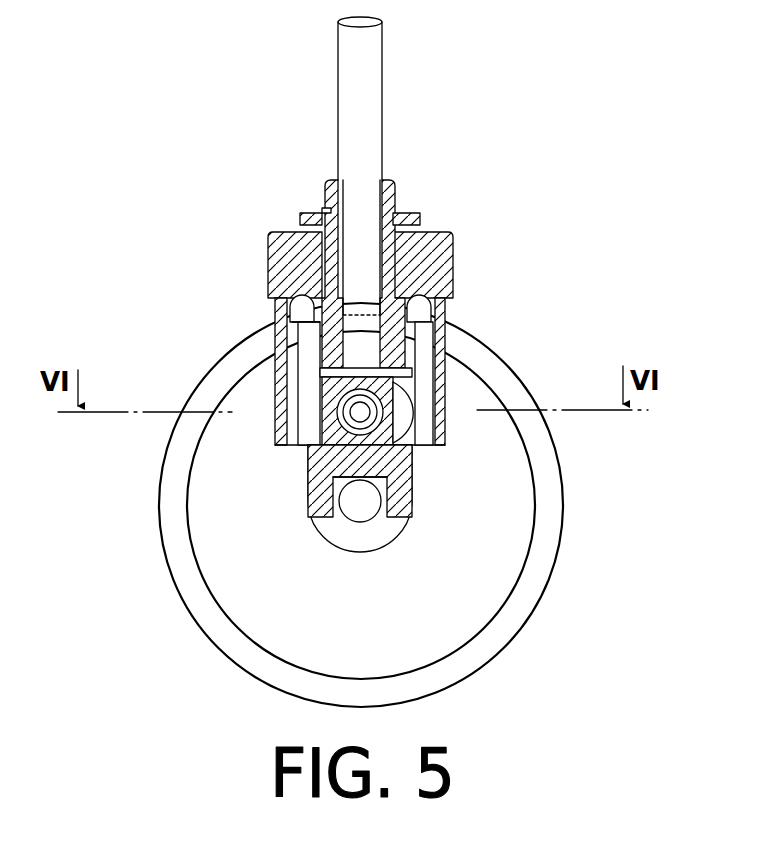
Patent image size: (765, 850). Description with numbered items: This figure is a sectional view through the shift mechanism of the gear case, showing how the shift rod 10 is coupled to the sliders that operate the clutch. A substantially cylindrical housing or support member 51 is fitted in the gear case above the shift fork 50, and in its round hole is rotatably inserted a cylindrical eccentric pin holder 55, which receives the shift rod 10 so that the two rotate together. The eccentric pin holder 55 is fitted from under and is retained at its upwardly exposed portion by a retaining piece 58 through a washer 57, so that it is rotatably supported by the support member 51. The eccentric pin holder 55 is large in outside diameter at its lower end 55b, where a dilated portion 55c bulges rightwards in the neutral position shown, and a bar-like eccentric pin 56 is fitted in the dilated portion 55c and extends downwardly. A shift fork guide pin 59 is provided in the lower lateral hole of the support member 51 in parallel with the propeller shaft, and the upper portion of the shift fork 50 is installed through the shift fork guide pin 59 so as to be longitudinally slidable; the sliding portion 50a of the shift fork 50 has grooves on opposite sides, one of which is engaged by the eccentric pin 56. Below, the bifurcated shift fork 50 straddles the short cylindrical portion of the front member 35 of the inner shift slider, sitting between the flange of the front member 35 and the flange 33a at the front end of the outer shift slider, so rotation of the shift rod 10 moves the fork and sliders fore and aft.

The shift rod 10 is at (385, 52).
The retaining piece 58 is at (323, 208).
The washer 57 is at (300, 213).
The eccentric pin holder 55 is at (395, 186).
The support member 51 is at (453, 236).
The dilated portion 55c is at (286, 340).
The lower end 55b is at (440, 345).
The eccentric pin 56 is at (300, 412).
The sliding portion 50a is at (420, 412).
The shift fork guide pin 59 is at (407, 458).
The shift fork 50 is at (308, 470).
The flange 33a is at (400, 537).
The front member 35 is at (357, 522).